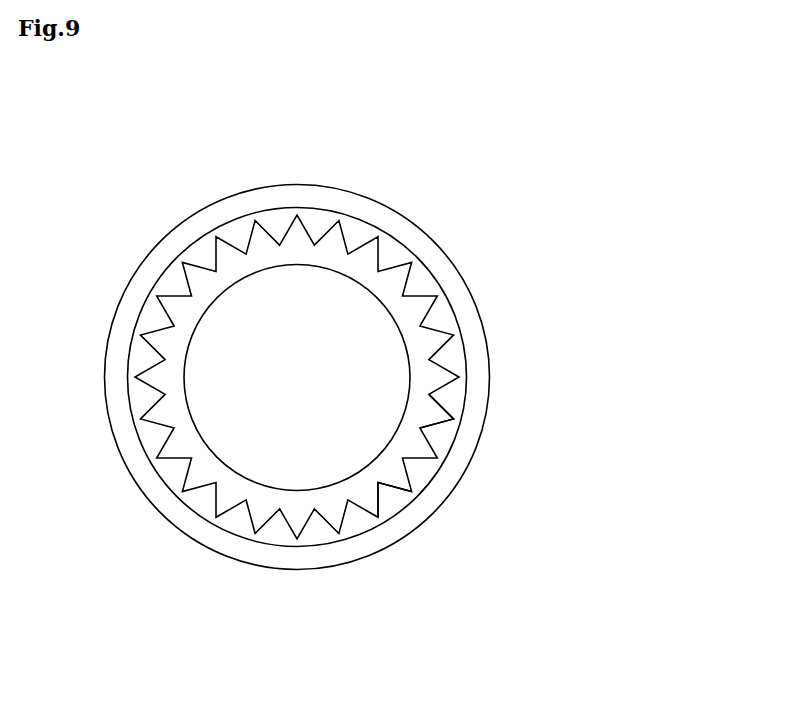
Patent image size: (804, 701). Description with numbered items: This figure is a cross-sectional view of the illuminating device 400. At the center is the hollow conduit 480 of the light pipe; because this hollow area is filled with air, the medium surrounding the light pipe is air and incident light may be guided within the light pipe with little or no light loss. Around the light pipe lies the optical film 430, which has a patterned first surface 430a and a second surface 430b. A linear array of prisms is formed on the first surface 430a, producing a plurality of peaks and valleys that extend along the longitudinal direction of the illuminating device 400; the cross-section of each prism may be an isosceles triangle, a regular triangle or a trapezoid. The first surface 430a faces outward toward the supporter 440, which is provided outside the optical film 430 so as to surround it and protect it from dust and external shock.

The illuminating device 400 is at (564, 153).
The supporter 440 is at (448, 286).
The hollow conduit 480 is at (335, 368).
The optical film 430 is at (403, 445).
The patterned first surface 430a is at (447, 403).
The second surface 430b is at (374, 461).